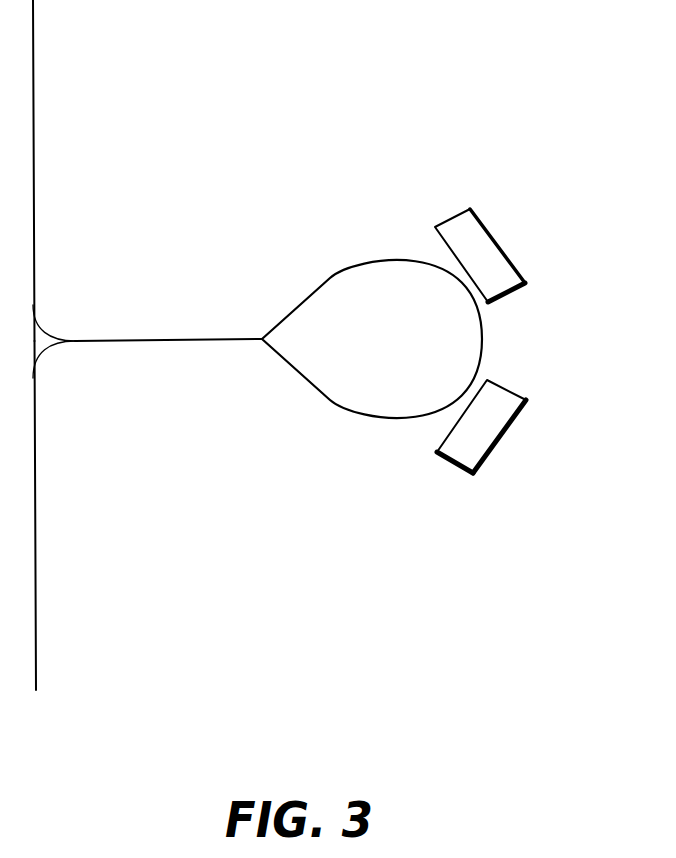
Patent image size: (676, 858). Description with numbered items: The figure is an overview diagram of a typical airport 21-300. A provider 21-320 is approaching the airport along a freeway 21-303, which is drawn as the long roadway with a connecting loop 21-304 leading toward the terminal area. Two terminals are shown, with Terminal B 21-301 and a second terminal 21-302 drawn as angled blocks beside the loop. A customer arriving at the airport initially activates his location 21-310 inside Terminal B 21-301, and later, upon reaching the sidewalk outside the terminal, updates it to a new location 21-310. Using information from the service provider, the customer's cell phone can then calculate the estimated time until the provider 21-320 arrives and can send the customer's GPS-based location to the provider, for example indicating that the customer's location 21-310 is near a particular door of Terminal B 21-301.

The airport 21-300 is at (480, 72).
The Terminal B 21-301 is at (488, 452).
The terminal TA 21-302 is at (496, 241).
The freeway 21-303 is at (36, 187).
The loop waveguide 21-304 is at (318, 287).
The customer's location 21-310 is at (482, 339).
The provider 21-320 is at (36, 530).